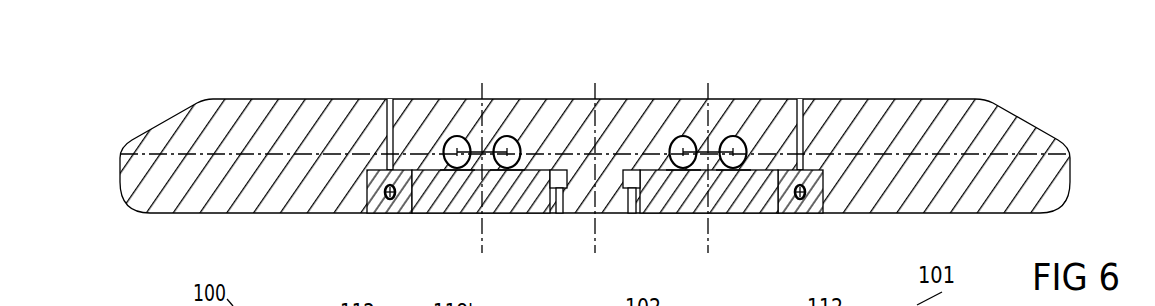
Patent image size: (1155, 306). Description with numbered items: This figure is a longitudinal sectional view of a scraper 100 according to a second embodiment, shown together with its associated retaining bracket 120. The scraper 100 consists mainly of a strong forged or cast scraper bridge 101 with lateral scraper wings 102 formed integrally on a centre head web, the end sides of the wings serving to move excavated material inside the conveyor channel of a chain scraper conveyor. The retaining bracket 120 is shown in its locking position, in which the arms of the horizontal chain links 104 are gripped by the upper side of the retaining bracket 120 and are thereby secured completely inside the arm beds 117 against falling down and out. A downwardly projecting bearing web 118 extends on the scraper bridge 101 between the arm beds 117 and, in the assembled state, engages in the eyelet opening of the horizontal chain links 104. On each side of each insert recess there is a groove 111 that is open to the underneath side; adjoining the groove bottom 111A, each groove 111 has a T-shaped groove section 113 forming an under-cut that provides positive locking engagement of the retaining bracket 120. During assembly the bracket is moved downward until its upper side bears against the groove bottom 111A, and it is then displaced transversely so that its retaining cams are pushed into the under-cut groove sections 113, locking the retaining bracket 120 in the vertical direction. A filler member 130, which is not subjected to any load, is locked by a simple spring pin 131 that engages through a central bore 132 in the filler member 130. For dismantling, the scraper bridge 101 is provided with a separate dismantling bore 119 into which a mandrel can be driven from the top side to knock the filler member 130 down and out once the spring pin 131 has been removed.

The scraper 100 is at (606, 128).
The scraper bridge 101 is at (167, 110).
The scraper wings 102 is at (263, 145).
The horizontal chain links 104 is at (457, 136).
The groove 111 is at (560, 211).
The groove bottom 111A is at (552, 172).
The T-shaped groove section 113 is at (590, 145).
The arm beds 117 is at (450, 138).
The bearing web 118 is at (478, 187).
The dismantling bore 119 is at (385, 130).
The retaining bracket 120 is at (523, 200).
The filler member 130 is at (403, 213).
The spring pin 131 is at (372, 203).
The central bore 132 is at (387, 190).